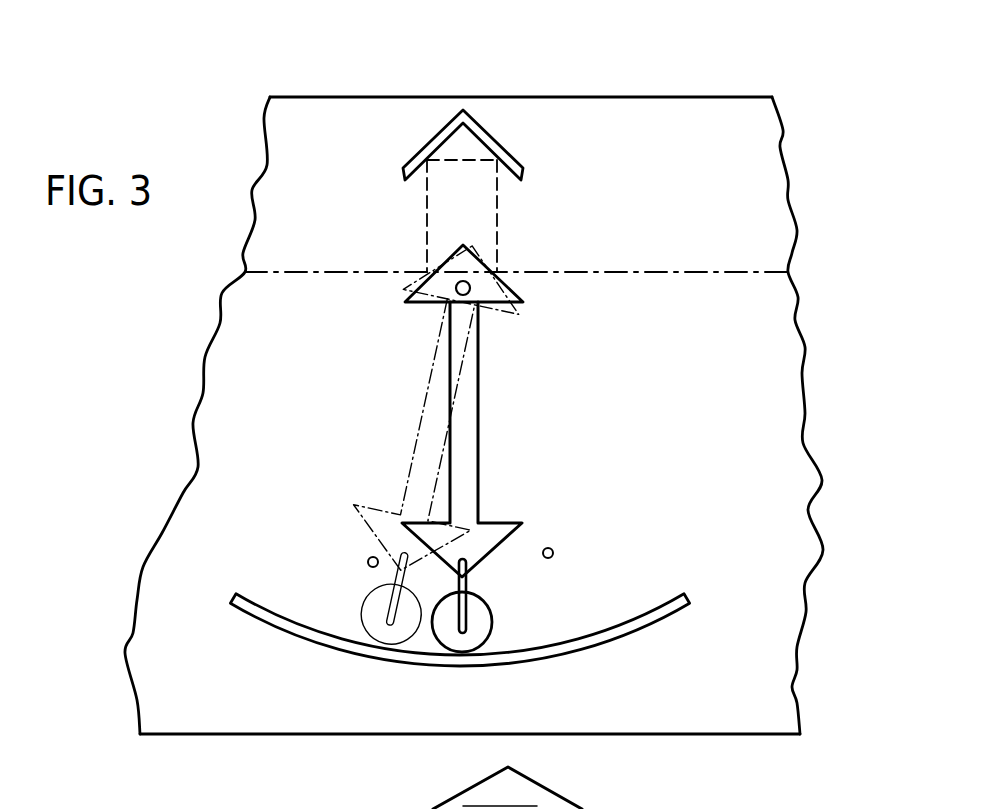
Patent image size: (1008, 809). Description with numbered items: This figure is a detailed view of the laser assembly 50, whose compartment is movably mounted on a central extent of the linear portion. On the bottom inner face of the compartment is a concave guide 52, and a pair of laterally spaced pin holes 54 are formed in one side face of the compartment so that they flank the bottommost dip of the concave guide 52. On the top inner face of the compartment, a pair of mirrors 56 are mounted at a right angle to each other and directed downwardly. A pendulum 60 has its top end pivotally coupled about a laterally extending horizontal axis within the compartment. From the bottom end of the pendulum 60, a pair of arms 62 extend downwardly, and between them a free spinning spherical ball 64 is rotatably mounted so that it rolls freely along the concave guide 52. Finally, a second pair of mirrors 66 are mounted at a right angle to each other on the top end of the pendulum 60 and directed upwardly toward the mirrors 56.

The laser assembly 50 is at (473, 70).
The concave guide 52 is at (638, 632).
The pin holes 54 is at (373, 568).
The pair of mirrors 56 is at (498, 137).
The pendulum 60 is at (478, 420).
The pair of arms 62 is at (457, 583).
The free spinning spherical ball 64 is at (475, 637).
The second pair of mirrors 66 is at (497, 272).